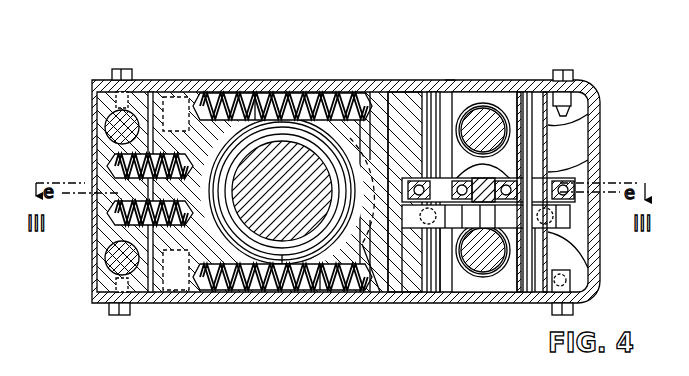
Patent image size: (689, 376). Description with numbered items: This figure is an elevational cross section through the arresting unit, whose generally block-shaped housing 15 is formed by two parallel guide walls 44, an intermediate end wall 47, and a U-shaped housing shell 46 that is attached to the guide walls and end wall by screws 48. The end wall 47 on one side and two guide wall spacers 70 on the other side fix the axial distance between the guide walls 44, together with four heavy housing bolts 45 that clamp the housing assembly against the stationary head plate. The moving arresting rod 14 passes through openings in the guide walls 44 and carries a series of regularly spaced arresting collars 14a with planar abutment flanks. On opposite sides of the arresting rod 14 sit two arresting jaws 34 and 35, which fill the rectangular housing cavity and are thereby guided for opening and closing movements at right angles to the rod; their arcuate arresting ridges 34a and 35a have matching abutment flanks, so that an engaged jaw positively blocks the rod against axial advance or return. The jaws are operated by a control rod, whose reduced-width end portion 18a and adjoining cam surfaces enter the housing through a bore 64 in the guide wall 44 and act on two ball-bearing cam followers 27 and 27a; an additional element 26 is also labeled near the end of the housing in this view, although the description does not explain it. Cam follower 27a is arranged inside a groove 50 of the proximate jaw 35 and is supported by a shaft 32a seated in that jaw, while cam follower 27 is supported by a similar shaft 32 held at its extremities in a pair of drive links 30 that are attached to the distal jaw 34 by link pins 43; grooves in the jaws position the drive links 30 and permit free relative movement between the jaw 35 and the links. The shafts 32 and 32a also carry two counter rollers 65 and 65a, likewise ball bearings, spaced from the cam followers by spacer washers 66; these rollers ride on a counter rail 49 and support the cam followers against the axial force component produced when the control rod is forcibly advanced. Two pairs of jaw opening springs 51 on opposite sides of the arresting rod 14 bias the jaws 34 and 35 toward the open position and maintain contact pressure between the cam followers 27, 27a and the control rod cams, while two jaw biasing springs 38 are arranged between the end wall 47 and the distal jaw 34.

The arresting rod 14 is at (283, 150).
The arresting collars 14a is at (283, 258).
The housing 15 is at (448, 72).
The end portion of control rod 18a is at (577, 170).
The nut 26 is at (572, 110).
The cam follower 27 is at (575, 242).
The cam follower 27a is at (375, 292).
The drive links 30 is at (512, 87).
The shaft 32 is at (580, 124).
The shaft 32a is at (400, 92).
The arresting jaw 34 is at (210, 140).
The arresting ridges 34a is at (217, 290).
The arresting jaw 35 is at (376, 135).
The arresting ridges 35a is at (320, 292).
The jaw biasing springs 38 is at (112, 206).
The link pins 43 is at (152, 92).
The guide walls 44 is at (462, 100).
The housing bolts 45 is at (105, 125).
The housing shell 46 is at (348, 86).
The end wall 47 is at (110, 234).
The screws 48 is at (117, 70).
The counter rail 49 is at (530, 292).
The groove 50 is at (402, 292).
The jaw opening springs 51 is at (270, 98).
The bore 64 is at (527, 175).
The counter roller 65 is at (553, 235).
The counter roller 65a is at (440, 292).
The spacer washers 66 is at (434, 180).
The guide wall spacers 70 is at (516, 92).